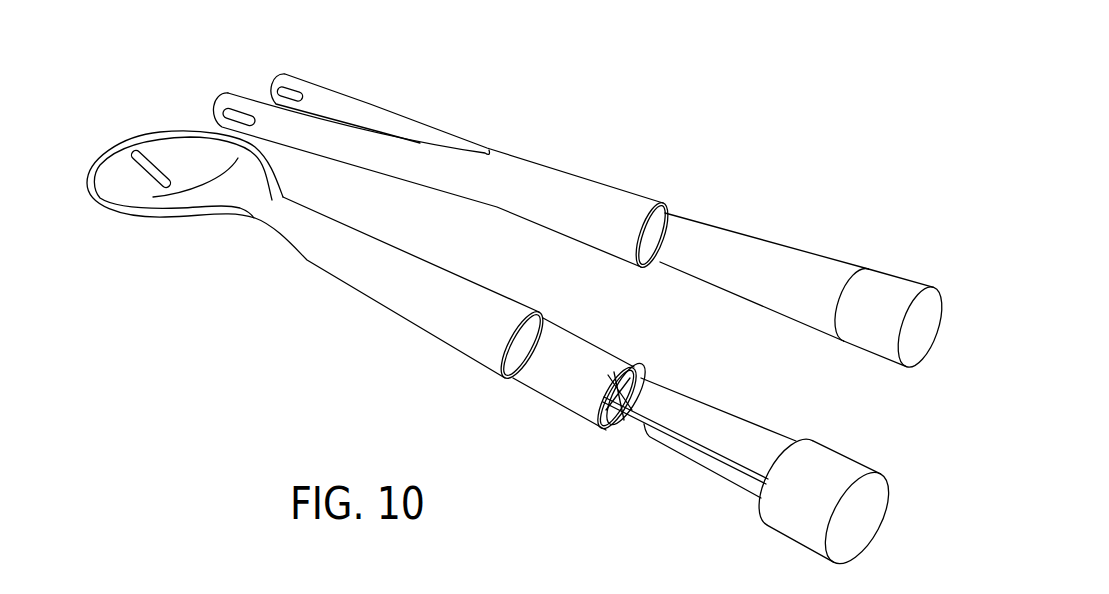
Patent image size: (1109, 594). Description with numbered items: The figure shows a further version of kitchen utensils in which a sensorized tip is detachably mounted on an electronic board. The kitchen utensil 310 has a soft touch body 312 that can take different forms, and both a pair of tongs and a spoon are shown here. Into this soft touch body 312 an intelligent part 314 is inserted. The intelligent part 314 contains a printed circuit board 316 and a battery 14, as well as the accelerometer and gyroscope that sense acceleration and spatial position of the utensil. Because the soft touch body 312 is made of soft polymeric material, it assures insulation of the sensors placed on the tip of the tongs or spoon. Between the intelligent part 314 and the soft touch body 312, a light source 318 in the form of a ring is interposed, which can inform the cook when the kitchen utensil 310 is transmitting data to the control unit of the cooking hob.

The kitchen utensil 310 is at (680, 133).
The soft touch body 312 is at (510, 175).
The intelligent part 314 is at (785, 244).
The printed circuit board 316 is at (727, 442).
The light source 318 is at (603, 430).
The battery 14 is at (688, 460).